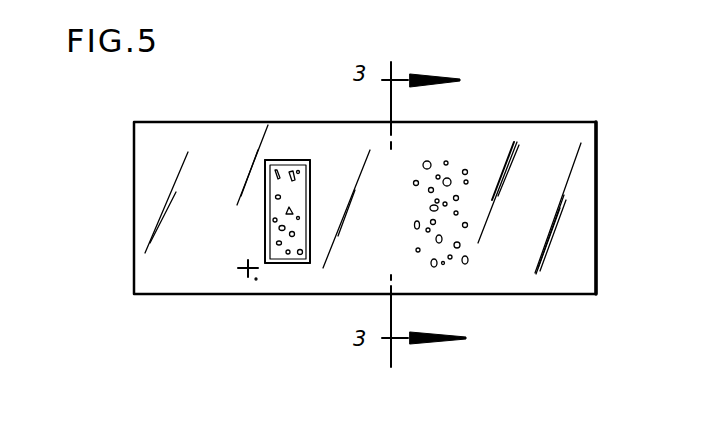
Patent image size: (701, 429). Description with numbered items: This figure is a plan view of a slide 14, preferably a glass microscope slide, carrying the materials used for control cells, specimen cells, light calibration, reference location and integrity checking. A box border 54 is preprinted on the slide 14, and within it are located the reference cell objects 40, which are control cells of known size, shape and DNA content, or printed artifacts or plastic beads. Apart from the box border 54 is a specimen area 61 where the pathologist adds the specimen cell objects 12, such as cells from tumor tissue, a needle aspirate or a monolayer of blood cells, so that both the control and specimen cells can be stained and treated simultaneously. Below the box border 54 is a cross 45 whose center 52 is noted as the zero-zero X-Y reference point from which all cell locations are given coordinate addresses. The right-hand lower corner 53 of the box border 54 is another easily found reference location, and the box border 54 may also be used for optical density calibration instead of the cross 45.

The slide 14 is at (561, 137).
The specimen cell objects 12 is at (450, 178).
The reference cell objects 40 is at (283, 175).
The box border 54 is at (313, 182).
The right-hand lower corner 53 is at (265, 258).
The center of the cross 52 is at (253, 273).
The cross 45 is at (258, 278).
The specimen area 61 is at (532, 212).